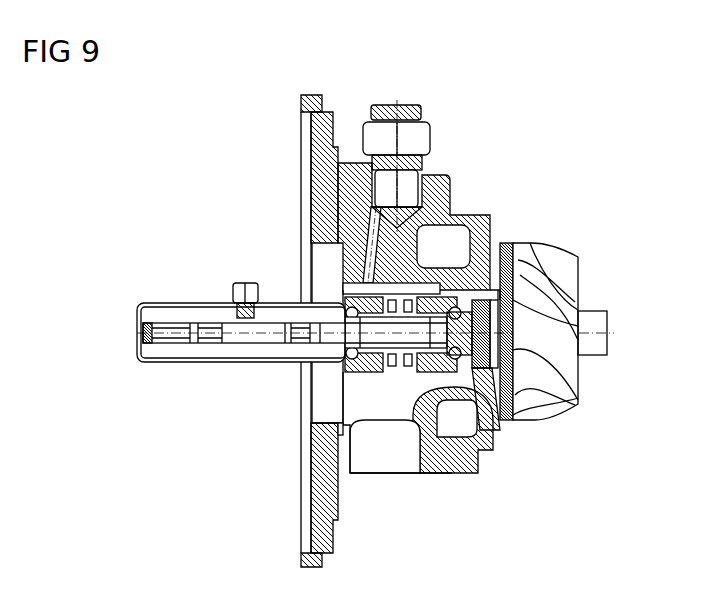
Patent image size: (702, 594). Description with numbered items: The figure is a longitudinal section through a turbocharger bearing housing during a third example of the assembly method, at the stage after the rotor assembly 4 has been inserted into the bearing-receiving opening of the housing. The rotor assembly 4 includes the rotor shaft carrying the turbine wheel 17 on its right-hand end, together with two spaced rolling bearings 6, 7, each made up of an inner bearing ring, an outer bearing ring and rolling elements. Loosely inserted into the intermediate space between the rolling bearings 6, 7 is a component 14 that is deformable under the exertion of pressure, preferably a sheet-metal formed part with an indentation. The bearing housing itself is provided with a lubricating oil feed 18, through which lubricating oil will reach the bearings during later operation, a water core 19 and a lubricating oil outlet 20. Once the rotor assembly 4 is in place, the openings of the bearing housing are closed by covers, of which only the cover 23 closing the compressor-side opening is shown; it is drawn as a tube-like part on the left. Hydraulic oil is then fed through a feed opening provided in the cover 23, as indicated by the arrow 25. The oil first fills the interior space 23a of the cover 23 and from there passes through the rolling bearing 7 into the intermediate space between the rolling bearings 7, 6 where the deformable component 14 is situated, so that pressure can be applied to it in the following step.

The rotor assembly 4 is at (533, 222).
The rolling bearing 6 is at (468, 362).
The rolling bearing 7 is at (351, 392).
The component deformable under pressure 14 is at (398, 360).
The turbine wheel 17 is at (552, 265).
The lubricating oil feed 18 is at (367, 250).
The water core 19 is at (459, 234).
The lubricating oil outlet 20 is at (411, 463).
The cover 23 is at (263, 354).
The interior space of the cover 23a is at (210, 351).
The arrow 25 is at (245, 278).